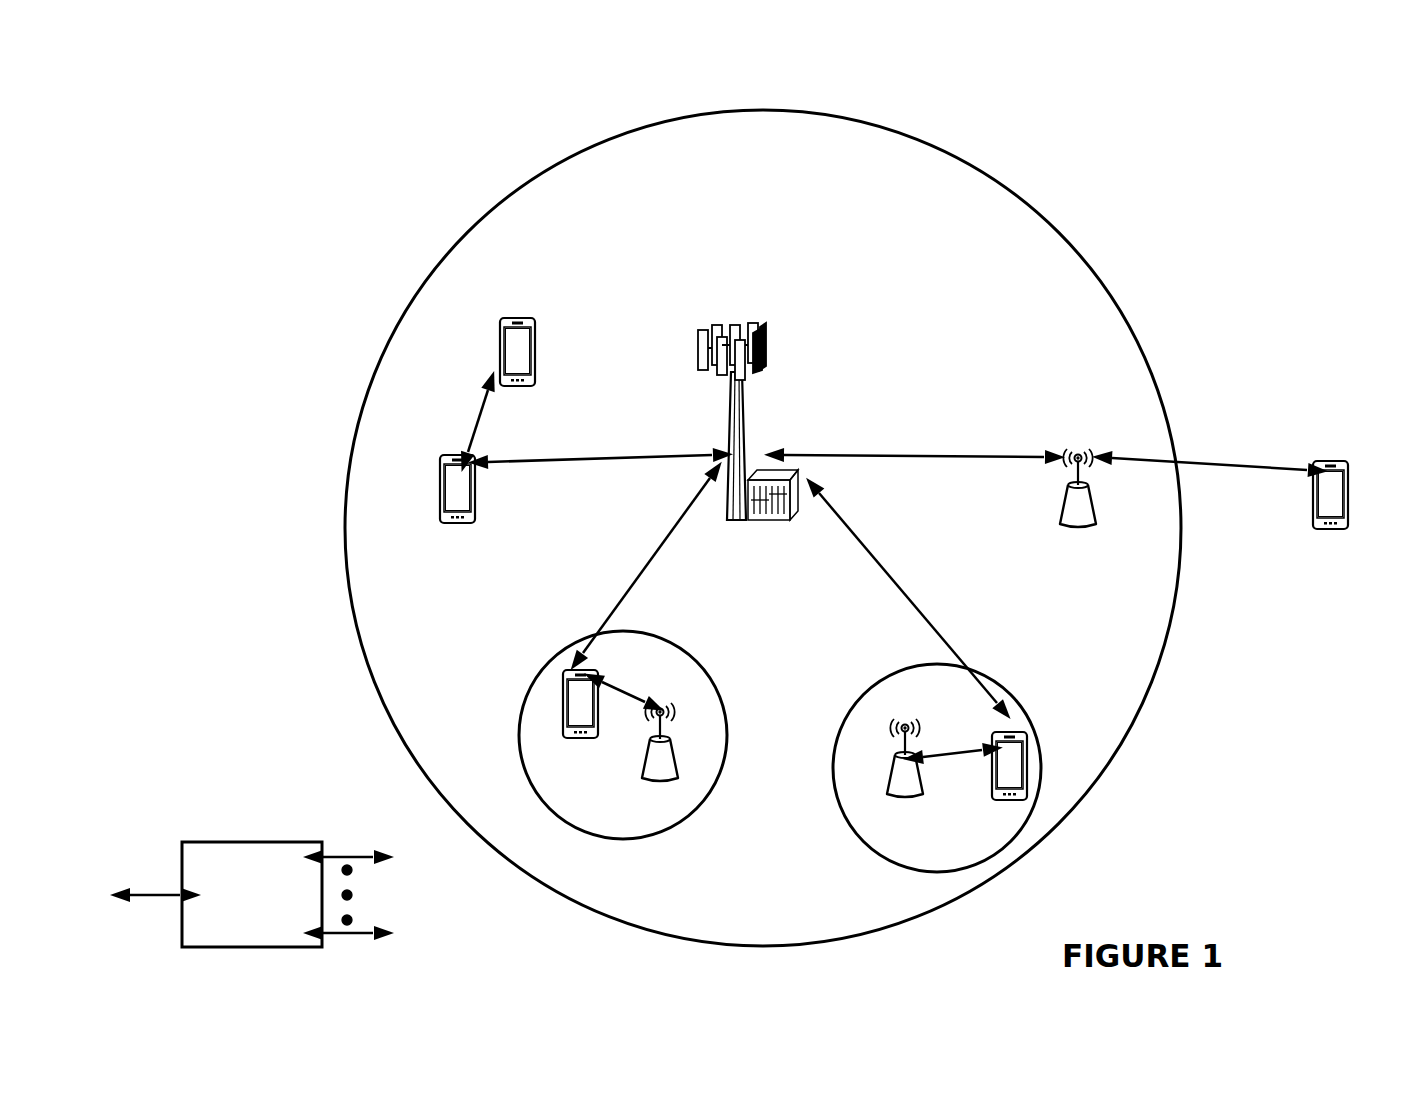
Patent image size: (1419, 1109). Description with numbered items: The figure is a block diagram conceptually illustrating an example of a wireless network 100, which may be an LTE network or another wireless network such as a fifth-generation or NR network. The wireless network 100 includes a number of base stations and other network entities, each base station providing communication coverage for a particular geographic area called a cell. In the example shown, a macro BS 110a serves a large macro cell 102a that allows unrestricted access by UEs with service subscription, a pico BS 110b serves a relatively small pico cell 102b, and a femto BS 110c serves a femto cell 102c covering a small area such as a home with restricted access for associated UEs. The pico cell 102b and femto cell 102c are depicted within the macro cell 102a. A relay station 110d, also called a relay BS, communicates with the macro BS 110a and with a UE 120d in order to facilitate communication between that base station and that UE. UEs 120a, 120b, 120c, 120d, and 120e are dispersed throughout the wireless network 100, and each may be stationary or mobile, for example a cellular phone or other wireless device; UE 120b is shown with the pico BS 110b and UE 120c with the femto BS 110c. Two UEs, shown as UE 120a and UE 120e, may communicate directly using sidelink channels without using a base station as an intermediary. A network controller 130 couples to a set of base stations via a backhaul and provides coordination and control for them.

The wireless network 100 is at (230, 100).
The macro cell 102a is at (1043, 212).
The pico cell 102b is at (716, 672).
The femto cell 102c is at (870, 686).
The macro BS 110a is at (766, 320).
The pico BS 110b is at (678, 770).
The femto BS 110c is at (886, 784).
The relay station 110d is at (1078, 448).
The UE 120a is at (440, 490).
The UE 120b is at (566, 740).
The UE 120c is at (1001, 801).
The UE 120d is at (1344, 461).
The UE 120e is at (500, 342).
The network controller 130 is at (250, 842).